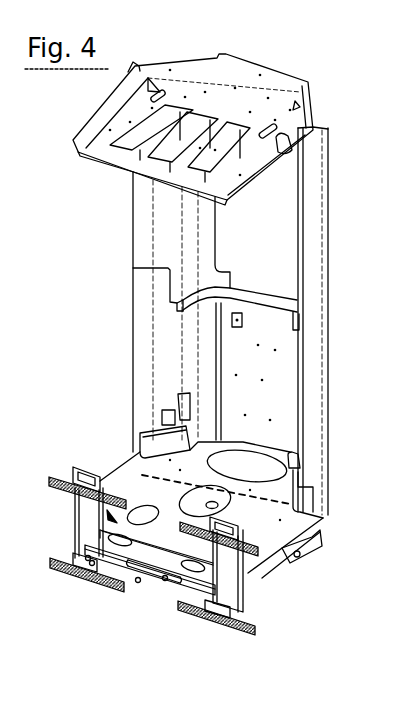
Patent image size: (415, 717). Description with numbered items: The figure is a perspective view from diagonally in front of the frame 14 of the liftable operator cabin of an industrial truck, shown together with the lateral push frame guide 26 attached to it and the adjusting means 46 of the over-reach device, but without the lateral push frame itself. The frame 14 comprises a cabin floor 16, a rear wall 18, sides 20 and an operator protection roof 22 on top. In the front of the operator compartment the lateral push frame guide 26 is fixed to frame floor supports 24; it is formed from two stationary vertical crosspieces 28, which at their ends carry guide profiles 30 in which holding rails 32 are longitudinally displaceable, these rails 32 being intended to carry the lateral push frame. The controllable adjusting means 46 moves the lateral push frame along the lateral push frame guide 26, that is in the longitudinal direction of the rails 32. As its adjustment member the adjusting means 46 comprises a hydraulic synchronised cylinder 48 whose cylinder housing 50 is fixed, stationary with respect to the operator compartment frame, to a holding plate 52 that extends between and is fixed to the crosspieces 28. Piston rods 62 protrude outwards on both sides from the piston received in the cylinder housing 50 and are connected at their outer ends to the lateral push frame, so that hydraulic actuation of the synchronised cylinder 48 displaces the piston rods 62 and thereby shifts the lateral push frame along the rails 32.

The frame 14 is at (163, 233).
The cabin floor 16 is at (132, 475).
The rear wall 18 is at (243, 335).
The sides 20 is at (154, 256).
The operator protection roof 22 is at (260, 108).
The frame floor supports 24 is at (247, 571).
The lateral push frame guide 26 is at (58, 573).
The stationary vertical crosspieces 28 is at (82, 515).
The guide profiles 30 is at (82, 470).
The holding rails 32 is at (60, 487).
The adjusting means 46 is at (150, 583).
The hydraulic synchronised cylinder 48 is at (168, 578).
The cylinder housing 50 is at (145, 563).
The holding plate 52 is at (88, 540).
The piston rods 62 is at (138, 581).